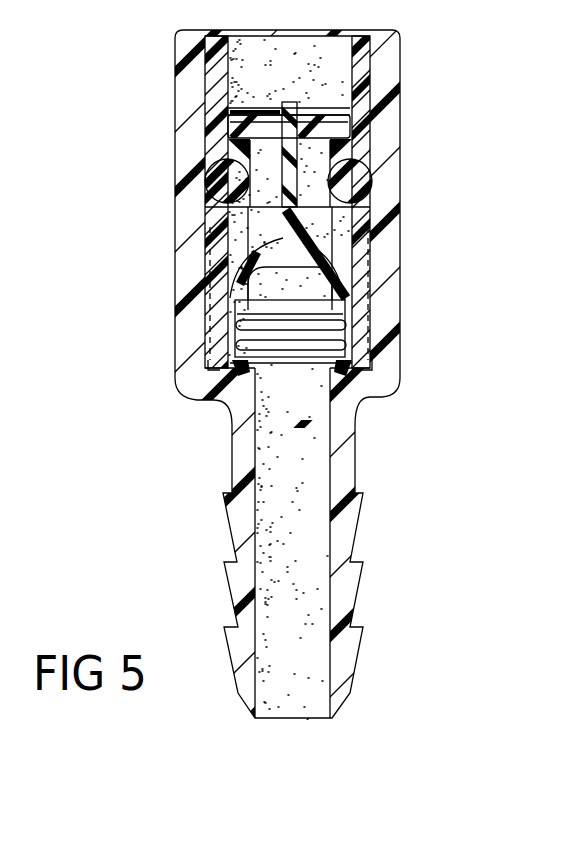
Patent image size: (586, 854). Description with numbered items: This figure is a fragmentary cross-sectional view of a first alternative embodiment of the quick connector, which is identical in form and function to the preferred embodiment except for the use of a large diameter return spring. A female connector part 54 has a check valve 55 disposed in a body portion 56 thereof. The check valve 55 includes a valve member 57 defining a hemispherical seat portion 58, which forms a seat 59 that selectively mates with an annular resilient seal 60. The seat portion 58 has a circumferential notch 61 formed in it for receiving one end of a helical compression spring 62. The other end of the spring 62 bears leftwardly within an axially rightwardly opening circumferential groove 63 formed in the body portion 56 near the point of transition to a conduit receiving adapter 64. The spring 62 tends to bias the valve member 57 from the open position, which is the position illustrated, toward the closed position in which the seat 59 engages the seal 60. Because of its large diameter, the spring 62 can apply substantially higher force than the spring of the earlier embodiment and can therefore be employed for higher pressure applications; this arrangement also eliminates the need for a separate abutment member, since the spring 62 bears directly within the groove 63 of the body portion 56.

The female connector part 54 is at (185, 428).
The check valve 55 is at (352, 226).
The body portion 56 is at (186, 214).
The valve member 57 is at (278, 246).
The hemispherical seat portion 58 is at (250, 270).
The seat 59 is at (352, 266).
The annular resilient seal 60 is at (363, 173).
The circumferential notch 61 is at (240, 326).
The helical compression spring 62 is at (240, 346).
The circumferential groove 63 is at (352, 345).
The conduit receiving adapter 64 is at (345, 428).